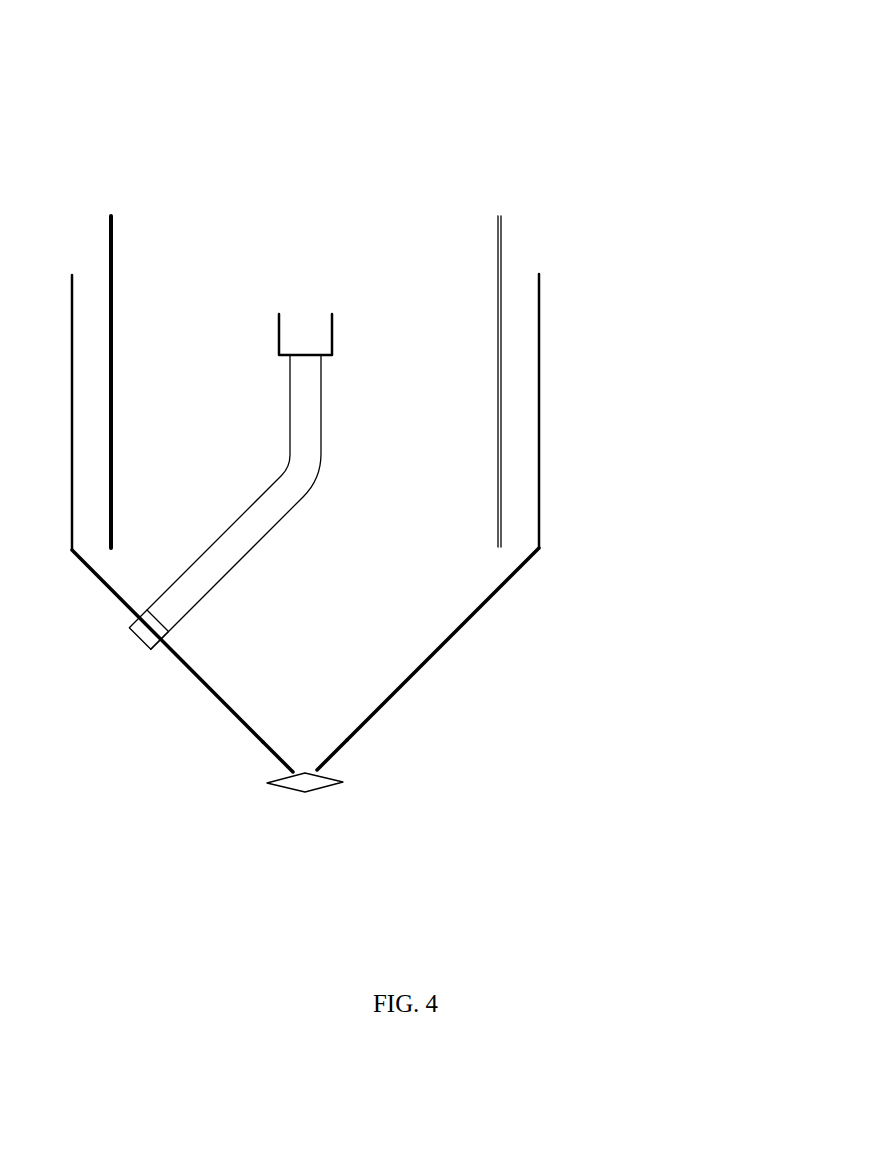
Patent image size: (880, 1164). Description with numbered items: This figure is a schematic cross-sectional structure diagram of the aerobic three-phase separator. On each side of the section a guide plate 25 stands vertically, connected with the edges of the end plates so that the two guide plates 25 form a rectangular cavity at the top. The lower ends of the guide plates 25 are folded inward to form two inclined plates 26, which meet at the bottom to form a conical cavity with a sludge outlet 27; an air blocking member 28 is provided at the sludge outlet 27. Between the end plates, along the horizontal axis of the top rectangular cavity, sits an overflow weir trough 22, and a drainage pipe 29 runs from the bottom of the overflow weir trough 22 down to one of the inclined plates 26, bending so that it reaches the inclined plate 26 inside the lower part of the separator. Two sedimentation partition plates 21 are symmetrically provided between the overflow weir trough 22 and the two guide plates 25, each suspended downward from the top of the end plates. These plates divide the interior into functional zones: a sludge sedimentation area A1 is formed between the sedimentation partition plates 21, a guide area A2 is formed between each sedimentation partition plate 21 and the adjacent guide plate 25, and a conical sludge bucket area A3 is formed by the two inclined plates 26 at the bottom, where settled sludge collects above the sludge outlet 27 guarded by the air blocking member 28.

The sedimentation partition plate 21 is at (115, 202).
The overflow weir trough 22 is at (302, 285).
The guide plate 25 is at (543, 362).
The inclined plate 26 is at (487, 607).
The sludge outlet 27 is at (313, 742).
The air blocking member 28 is at (310, 785).
The drainage pipe 29 is at (245, 535).
The sludge sedimentation area A1 is at (420, 327).
The guide area A2 is at (521, 275).
The conical sludge bucket area A3 is at (353, 645).